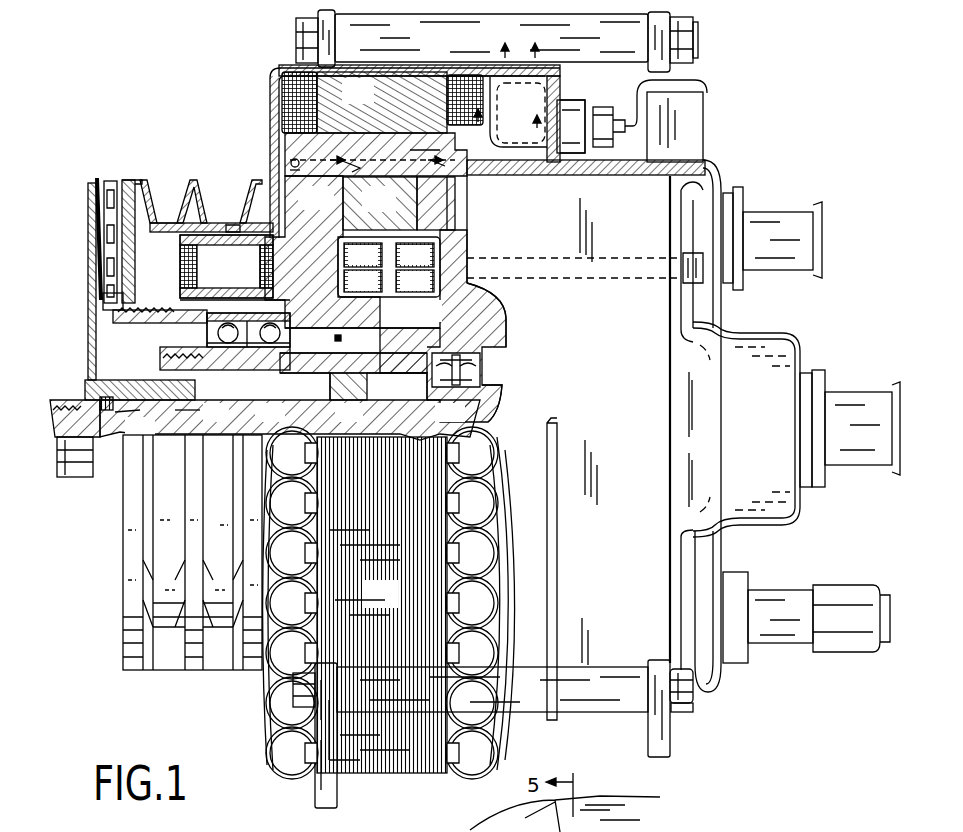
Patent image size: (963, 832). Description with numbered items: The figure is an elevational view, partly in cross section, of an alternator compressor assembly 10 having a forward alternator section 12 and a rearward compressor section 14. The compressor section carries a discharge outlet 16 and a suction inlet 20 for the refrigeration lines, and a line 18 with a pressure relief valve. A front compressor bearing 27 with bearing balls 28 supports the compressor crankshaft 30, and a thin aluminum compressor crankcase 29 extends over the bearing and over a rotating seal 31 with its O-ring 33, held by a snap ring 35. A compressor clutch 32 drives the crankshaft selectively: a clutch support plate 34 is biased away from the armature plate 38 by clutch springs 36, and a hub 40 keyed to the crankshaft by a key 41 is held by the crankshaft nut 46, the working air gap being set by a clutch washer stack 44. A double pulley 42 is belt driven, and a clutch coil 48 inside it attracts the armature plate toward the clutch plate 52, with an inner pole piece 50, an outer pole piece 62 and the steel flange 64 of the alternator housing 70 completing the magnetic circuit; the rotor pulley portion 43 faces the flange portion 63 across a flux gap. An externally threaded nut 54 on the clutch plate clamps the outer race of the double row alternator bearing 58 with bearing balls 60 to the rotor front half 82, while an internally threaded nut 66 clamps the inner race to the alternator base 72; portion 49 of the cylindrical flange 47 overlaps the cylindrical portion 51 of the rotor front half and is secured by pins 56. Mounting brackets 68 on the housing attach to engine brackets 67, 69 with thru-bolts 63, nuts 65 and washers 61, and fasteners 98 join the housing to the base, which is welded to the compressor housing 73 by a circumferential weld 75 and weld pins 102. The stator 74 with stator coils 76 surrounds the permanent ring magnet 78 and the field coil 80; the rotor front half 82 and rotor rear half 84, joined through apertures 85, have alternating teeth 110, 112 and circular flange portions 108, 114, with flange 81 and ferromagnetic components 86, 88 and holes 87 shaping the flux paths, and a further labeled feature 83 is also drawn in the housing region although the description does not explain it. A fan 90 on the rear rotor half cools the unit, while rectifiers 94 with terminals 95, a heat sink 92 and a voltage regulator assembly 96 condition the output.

The alternator compressor assembly 10 is at (750, 72).
The alternator section 12 is at (264, 44).
The compressor section 14 is at (757, 188).
The discharge outlet 16 is at (784, 215).
The line 18 is at (790, 598).
The suction inlet 20 is at (860, 452).
The front compressor bearing 27 is at (478, 390).
The bearing balls 28 is at (480, 366).
The compressor crankcase 29 is at (490, 312).
The compressor crankshaft 30 is at (290, 420).
The rotating seal 31 is at (350, 398).
The compressor clutch 32 is at (80, 210).
The O-ring 33 is at (370, 385).
The clutch support plate 34 is at (88, 223).
The snap ring 35 is at (330, 380).
The clutch springs 36 is at (98, 200).
The armature plate 38 is at (104, 265).
The hub 40 is at (195, 392).
The key 41 is at (178, 410).
The double pulley 42 is at (190, 182).
The rotor pulley portion 43 is at (170, 222).
The clutch washer stack 44 is at (180, 417).
The crankshaft nut 46 is at (78, 397).
The cylindrical flange 47 is at (120, 306).
The clutch coil 48 is at (231, 277).
The portion of flange 49 is at (262, 250).
The clutch inner pole piece 50 is at (180, 300).
The horizontal cylindrical portion 51 is at (218, 335).
The clutch plate 52 is at (135, 262).
The externally threaded nut 54 is at (143, 323).
The pins 56 is at (173, 337).
The double row alternator bearing 58 is at (282, 348).
The bearing balls 60 is at (268, 345).
The washers 61 is at (688, 33).
The outer pole piece 62 is at (272, 258).
The thru-bolts 63 is at (296, 36).
The flange 64 is at (288, 147).
The nuts 65 is at (690, 50).
The internally threaded nut 66 is at (163, 360).
The engine mounting bracket 67 is at (323, 787).
The mounting brackets 68 is at (298, 44).
The engine mounting bracket 69 is at (337, 33).
The alternator housing 70 is at (268, 78).
The alternator base 72 is at (440, 321).
The compressor housing 73 is at (592, 233).
The stator 74 is at (372, 102).
The circumferential weld 75 is at (582, 175).
The stator coils 76 is at (497, 528).
The permanent ring magnet 78 is at (393, 209).
The alternator field coil 80 is at (425, 293).
The flange 81 is at (411, 341).
The rotor front half 82 is at (331, 209).
The passage 83 is at (284, 138).
The rotor rear half 84 is at (445, 210).
The apertures 85 is at (289, 169).
The ferromagnetic component 86 is at (360, 281).
The band of holes 87 is at (360, 254).
The shell 88 is at (412, 254).
The fan 90 is at (517, 95).
The heat sink 92 is at (578, 100).
The rectifiers 94 is at (603, 107).
The terminals 95 is at (707, 86).
The voltage regulator assembly 96 is at (696, 125).
The fasteners 98 is at (572, 62).
The weld pins 102 is at (575, 283).
The circular flange portion 108 is at (360, 341).
The teeth 110 is at (352, 165).
The teeth 112 is at (436, 160).
The circular flange portion 114 is at (449, 197).